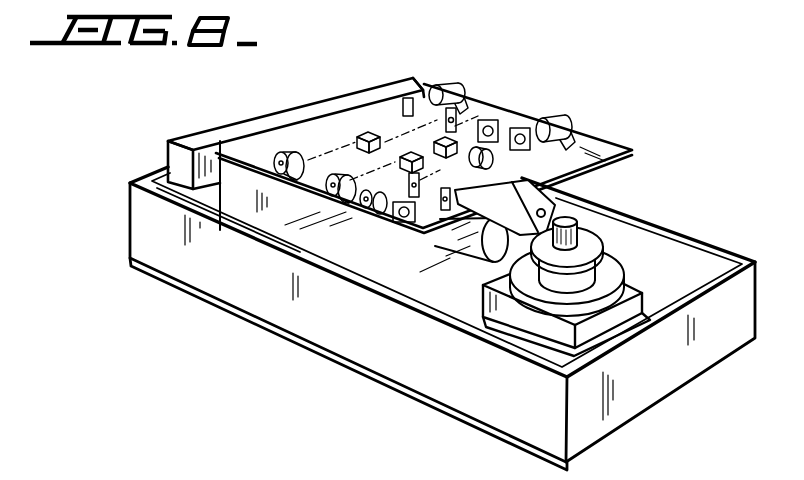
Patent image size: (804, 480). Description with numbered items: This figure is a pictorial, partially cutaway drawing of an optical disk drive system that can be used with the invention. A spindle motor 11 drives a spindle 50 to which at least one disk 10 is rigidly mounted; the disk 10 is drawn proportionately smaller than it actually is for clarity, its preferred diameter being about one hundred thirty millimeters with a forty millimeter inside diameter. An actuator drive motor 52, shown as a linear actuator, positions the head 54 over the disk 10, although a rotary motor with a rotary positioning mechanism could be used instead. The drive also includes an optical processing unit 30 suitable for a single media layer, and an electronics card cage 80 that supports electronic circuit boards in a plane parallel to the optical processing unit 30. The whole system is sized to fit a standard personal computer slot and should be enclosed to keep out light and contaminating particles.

The disk 10 is at (630, 256).
The spindle motor 11 is at (558, 272).
The optical processing unit 30 is at (532, 107).
The spindle 50 is at (614, 228).
The actuator drive motor 52 is at (478, 258).
The head 54 is at (602, 194).
The electronics card cage 80 is at (296, 104).